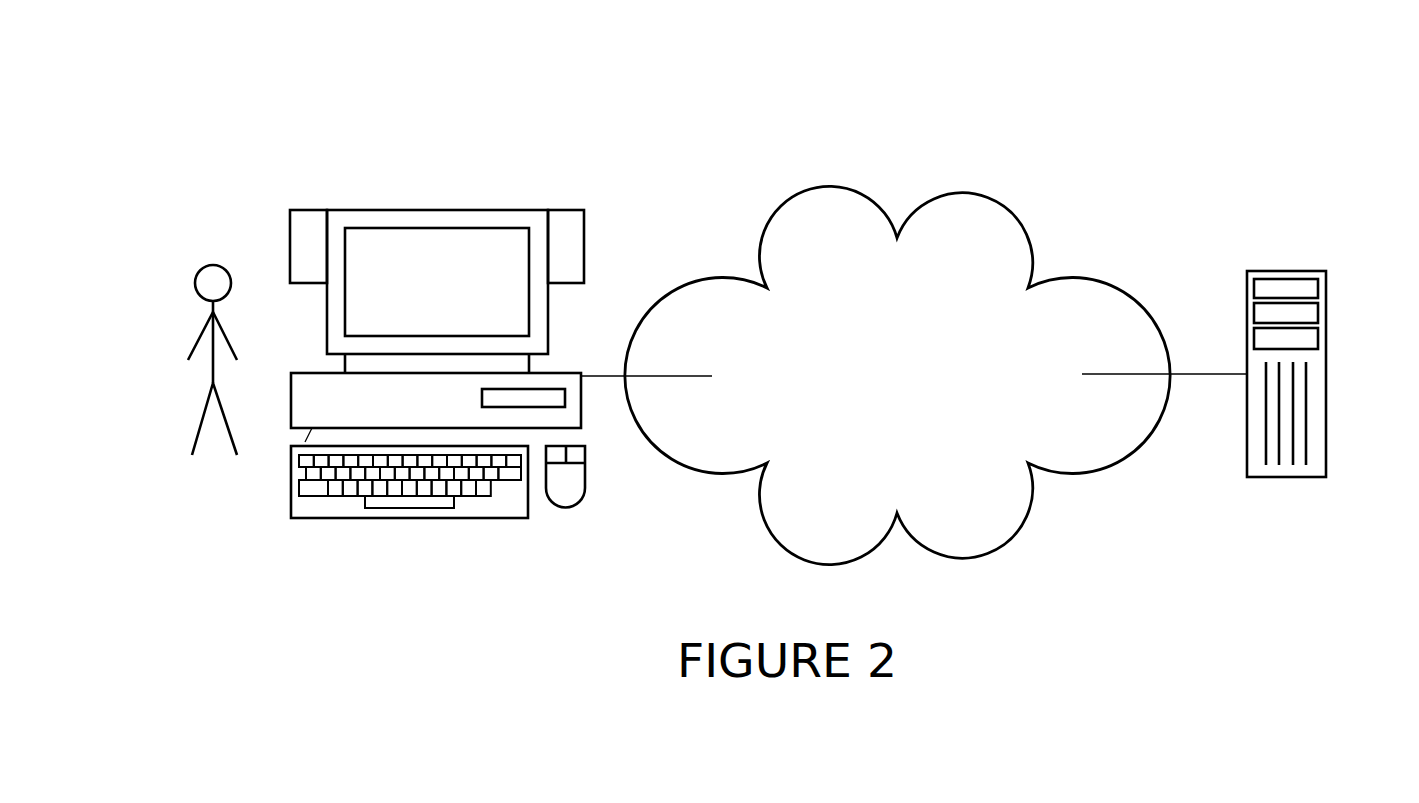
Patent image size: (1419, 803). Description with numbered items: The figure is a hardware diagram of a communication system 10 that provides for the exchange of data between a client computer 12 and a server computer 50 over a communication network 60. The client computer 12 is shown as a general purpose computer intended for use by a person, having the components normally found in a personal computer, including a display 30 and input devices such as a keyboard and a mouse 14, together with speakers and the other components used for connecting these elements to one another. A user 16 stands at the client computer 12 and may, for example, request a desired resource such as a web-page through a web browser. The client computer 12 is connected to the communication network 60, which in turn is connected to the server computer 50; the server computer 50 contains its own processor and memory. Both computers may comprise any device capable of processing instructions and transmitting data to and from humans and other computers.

The communication system 10 is at (672, 34).
The client computer 12 is at (584, 217).
The display 30 is at (430, 227).
The user 16 is at (210, 262).
The mouse 14 is at (570, 508).
The communication network 60 is at (812, 207).
The server computer 50 is at (1326, 303).